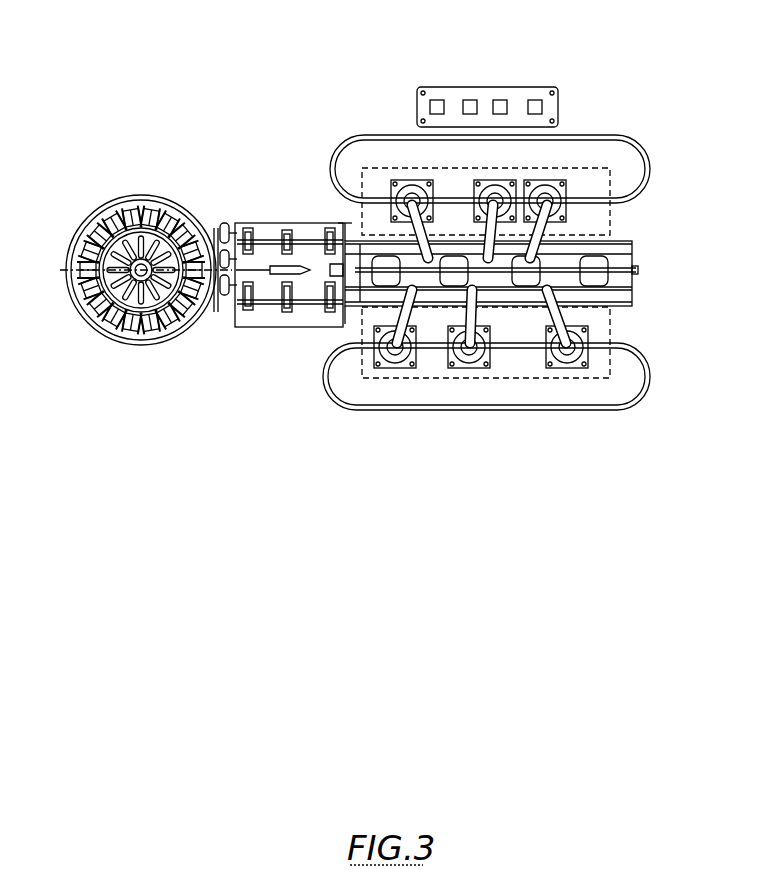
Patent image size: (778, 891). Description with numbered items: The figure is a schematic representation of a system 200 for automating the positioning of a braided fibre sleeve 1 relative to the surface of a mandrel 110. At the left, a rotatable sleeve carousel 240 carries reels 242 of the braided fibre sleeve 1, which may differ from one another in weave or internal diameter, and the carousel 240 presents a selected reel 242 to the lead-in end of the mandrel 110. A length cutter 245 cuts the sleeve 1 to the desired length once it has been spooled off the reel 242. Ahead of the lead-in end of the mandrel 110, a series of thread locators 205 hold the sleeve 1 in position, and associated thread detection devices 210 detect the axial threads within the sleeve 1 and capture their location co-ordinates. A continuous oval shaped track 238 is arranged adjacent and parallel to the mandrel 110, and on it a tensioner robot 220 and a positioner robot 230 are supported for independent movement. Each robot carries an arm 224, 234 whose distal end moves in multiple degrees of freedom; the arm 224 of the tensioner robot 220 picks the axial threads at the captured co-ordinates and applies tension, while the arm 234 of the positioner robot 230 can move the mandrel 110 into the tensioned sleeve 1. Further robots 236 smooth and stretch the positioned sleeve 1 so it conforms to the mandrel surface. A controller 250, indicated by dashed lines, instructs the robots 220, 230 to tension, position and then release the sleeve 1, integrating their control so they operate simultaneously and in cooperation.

The braided fibre sleeve 1 is at (233, 226).
The mandrel 110 is at (346, 300).
The system 200 is at (643, 417).
The thread locators 205 is at (328, 228).
The thread detection devices 210 is at (286, 228).
The tensioner robot 220 is at (412, 180).
The arm 224 is at (446, 250).
The positioner robot 230 is at (482, 255).
The arm 234 is at (468, 312).
The further robots 236 is at (548, 184).
The oval shaped track 238 is at (638, 136).
The sleeve carousel 240 is at (100, 200).
The reel 242 is at (120, 332).
The length cutter 245 is at (222, 318).
The controller 250 is at (612, 218).